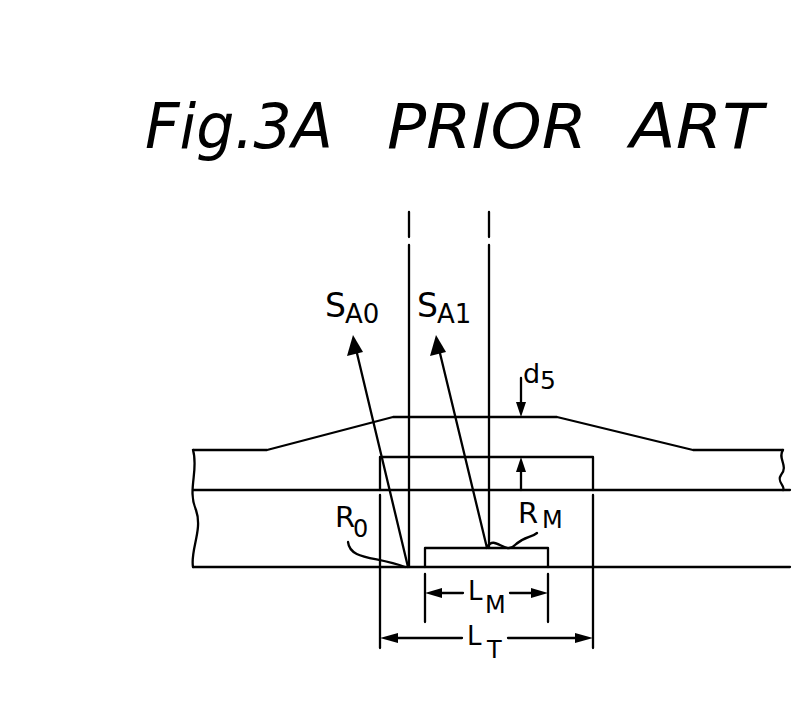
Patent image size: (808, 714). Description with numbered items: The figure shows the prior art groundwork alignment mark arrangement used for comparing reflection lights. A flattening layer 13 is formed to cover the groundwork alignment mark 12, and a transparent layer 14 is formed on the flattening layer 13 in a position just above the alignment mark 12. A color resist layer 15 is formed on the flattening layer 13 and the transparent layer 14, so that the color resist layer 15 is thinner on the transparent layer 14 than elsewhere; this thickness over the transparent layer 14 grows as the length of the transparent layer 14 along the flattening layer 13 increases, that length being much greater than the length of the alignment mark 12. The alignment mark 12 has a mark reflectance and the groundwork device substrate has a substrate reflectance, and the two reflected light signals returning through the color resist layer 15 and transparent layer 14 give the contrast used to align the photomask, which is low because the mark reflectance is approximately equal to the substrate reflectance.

The alignment mark 12 is at (447, 558).
The flattening layer 13 is at (212, 528).
The transparent layer 14 is at (586, 475).
The color resist layer 15 is at (212, 468).